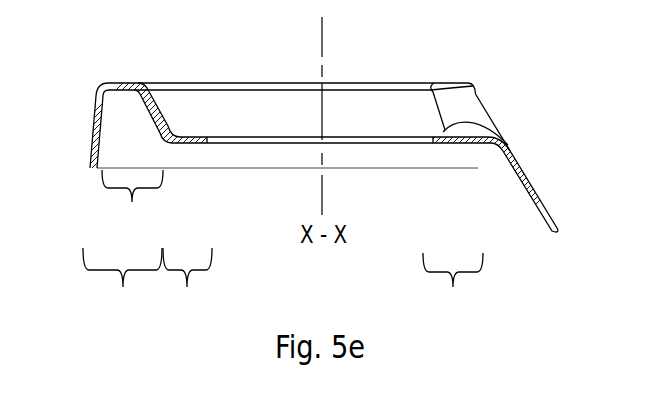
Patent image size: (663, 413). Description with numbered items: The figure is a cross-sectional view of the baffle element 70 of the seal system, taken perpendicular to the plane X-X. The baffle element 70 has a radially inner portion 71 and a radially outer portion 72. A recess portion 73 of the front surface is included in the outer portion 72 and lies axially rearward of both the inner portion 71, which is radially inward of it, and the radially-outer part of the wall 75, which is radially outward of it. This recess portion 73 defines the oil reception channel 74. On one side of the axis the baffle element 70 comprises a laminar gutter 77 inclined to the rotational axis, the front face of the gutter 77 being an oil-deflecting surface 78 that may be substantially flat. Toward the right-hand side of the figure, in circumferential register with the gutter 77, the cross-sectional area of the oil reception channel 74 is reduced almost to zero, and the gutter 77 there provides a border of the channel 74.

The baffle element 70 is at (174, 122).
The radially inner portion 71 is at (323, 285).
The radially outer portion 72 is at (122, 285).
The recess portion 73 is at (132, 206).
The oil reception channel 74 is at (125, 117).
The wall 75 is at (90, 143).
The laminar gutter 77 is at (541, 234).
The oil-deflecting surface 78 is at (502, 151).